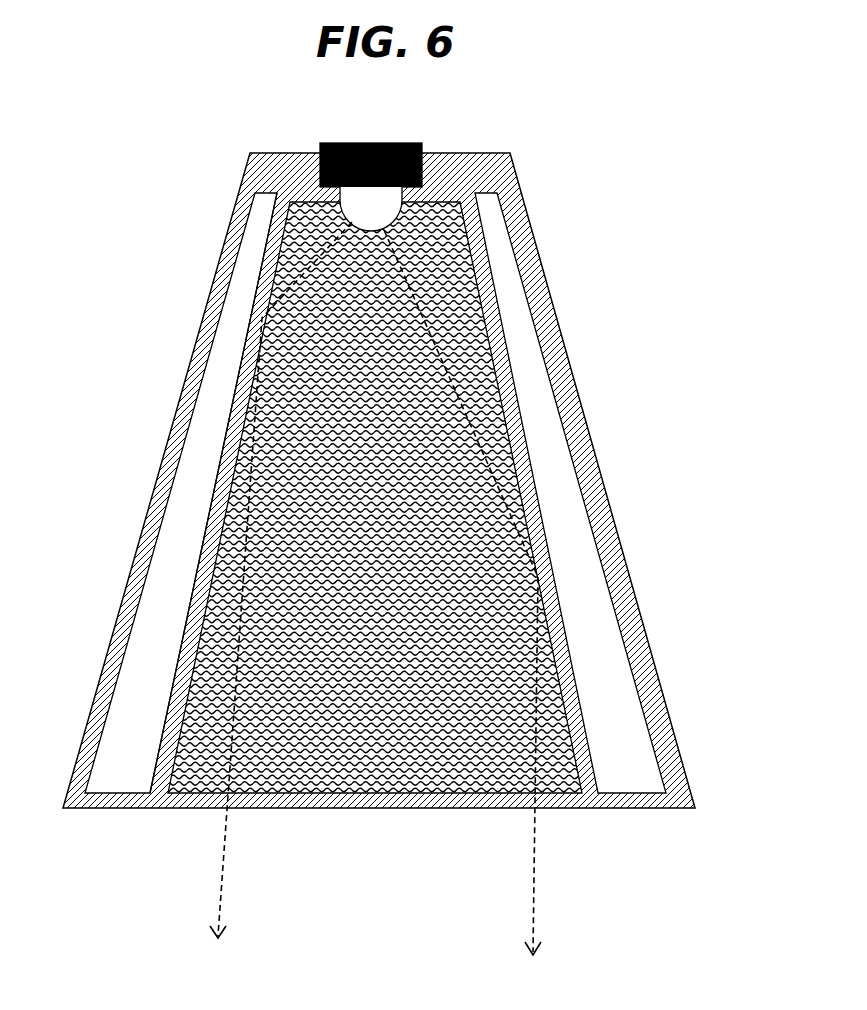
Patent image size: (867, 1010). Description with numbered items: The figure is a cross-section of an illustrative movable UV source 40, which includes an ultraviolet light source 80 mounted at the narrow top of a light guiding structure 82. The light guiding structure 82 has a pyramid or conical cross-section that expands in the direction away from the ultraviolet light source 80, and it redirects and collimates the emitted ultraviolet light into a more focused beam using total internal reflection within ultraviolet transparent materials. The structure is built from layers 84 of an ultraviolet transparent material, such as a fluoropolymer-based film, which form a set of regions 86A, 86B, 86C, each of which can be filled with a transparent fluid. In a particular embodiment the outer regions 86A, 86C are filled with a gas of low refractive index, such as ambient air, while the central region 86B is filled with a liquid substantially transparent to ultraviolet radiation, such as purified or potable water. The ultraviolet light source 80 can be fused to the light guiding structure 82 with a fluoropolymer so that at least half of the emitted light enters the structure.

The movable UV source 40 is at (162, 112).
The ultraviolet light source 80 is at (378, 143).
The light guiding structure 82 is at (178, 315).
The layers 84 is at (170, 463).
The region 86A is at (148, 608).
The region 86B is at (386, 796).
The region 86C is at (602, 600).